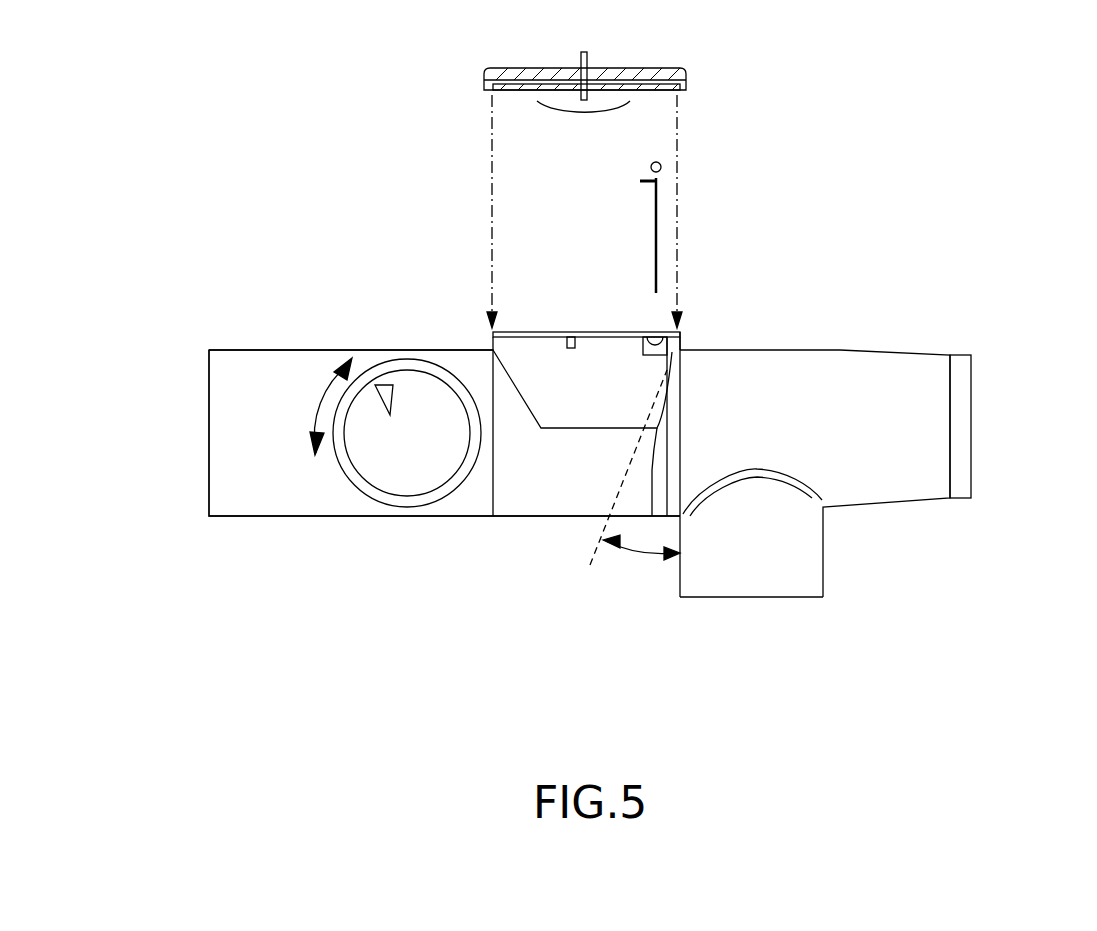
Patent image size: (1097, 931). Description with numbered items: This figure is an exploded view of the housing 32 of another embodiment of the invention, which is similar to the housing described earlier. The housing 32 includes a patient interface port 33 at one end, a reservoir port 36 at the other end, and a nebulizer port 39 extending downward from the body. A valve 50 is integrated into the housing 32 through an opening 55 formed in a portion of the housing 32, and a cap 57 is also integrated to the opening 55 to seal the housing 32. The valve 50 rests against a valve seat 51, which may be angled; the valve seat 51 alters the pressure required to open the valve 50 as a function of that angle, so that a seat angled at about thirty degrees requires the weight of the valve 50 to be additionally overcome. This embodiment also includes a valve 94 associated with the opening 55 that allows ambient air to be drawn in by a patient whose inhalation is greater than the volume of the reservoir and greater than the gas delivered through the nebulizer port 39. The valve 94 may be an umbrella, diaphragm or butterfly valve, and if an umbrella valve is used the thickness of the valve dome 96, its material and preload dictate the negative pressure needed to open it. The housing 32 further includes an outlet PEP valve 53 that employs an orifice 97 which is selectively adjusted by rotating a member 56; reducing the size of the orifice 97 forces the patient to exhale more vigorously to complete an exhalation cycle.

The housing 32 is at (280, 142).
The patient interface port 33 is at (209, 443).
The reservoir port 36 is at (971, 470).
The nebulizer port 39 is at (808, 598).
The valve 50 is at (668, 232).
The valve seat 51 is at (645, 472).
The outlet PEP valve 53 is at (482, 486).
The opening 55 is at (630, 333).
The member 56 is at (392, 453).
The cap 57 is at (687, 79).
The valve 94 is at (604, 78).
The valve dome 96 is at (566, 118).
The orifice 97 is at (386, 385).